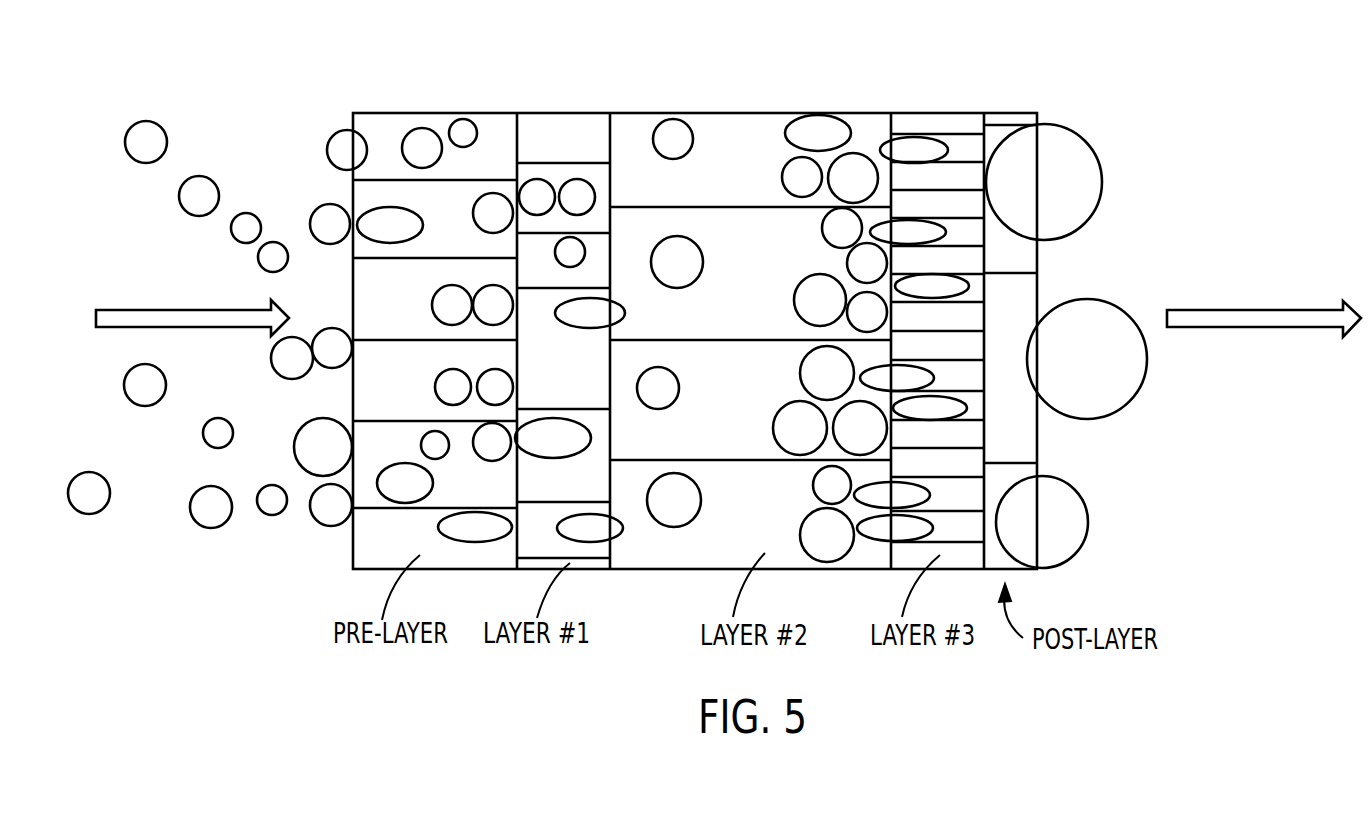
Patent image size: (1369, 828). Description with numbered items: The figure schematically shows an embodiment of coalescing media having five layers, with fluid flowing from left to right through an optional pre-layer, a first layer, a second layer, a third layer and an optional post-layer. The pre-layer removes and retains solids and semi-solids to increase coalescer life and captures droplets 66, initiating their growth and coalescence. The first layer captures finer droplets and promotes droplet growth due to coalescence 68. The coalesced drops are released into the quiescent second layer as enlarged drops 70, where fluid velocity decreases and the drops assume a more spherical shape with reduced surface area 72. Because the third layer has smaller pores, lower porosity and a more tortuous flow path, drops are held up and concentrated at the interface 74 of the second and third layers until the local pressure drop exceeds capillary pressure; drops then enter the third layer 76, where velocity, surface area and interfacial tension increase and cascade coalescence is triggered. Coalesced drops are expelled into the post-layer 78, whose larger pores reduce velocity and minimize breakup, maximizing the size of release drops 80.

The droplets 66 is at (420, 137).
The droplet growth due to coalescence 68 is at (547, 443).
The enlarged drops 70 is at (615, 530).
The drops with more spherical shape and reduced surface area 72 is at (660, 243).
The interface of Layer #2 and Layer #3 74 is at (890, 141).
The drops entering Layer #3 76 is at (877, 530).
The coalesced drops expelled into Post-layer 78 is at (1060, 148).
The release drops 80 is at (1092, 308).